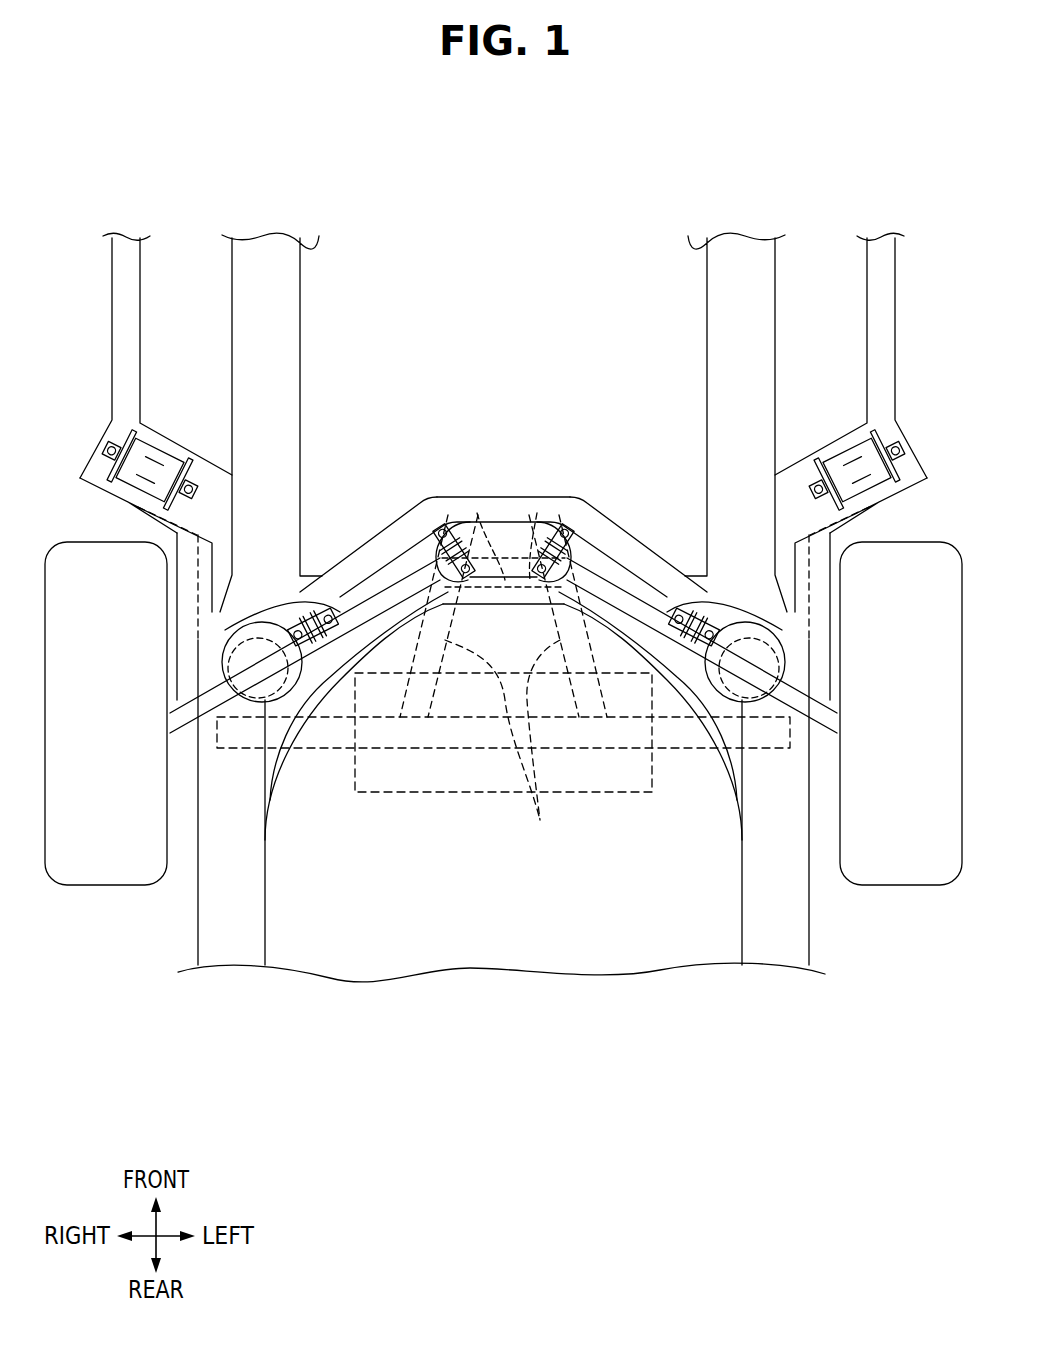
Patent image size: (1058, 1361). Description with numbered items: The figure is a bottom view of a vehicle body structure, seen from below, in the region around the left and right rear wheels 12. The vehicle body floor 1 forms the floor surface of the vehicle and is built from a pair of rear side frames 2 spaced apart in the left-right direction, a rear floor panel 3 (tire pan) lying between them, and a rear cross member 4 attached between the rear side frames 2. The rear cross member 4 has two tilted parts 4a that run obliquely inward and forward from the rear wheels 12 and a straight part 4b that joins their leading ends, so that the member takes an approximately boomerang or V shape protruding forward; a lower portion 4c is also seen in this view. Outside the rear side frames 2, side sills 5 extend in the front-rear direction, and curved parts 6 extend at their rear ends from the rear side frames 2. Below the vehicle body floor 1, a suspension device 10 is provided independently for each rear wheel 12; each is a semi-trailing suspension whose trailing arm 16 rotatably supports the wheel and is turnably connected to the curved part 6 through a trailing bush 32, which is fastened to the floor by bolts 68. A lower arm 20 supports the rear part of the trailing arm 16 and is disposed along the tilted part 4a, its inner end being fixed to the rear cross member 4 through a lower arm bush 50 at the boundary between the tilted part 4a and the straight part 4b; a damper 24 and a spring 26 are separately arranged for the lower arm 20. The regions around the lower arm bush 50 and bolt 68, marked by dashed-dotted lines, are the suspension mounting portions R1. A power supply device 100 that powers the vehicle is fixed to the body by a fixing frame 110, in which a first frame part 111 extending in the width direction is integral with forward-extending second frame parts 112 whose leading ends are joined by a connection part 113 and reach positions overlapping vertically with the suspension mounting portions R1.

The vehicle body floor 1 is at (647, 995).
The rear side frame 2 is at (253, 915).
The rear floor panel 3 is at (448, 932).
The rear cross member 4 is at (401, 490).
The tilted part 4a is at (383, 540).
The straight part 4b is at (548, 518).
The lower portion of cross member 4c is at (533, 602).
The side sill 5 is at (112, 330).
The curved part 6 is at (205, 470).
The suspension device 10 is at (286, 735).
The rear wheel 12 is at (92, 885).
The trailing arm 16 is at (170, 578).
The lower arm 20 is at (333, 690).
The damper 24 is at (330, 610).
The spring 26 is at (258, 735).
The trailing bush 32 is at (162, 446).
The lower arm bush 50 is at (533, 522).
The bolt 68 is at (440, 522).
The power supply device 100 is at (397, 808).
The fixing frame 110 is at (602, 770).
The first frame part 111 is at (445, 737).
The second frame part 112 is at (536, 787).
The connection part 113 is at (497, 522).
The suspension mounting portion R1 is at (403, 493).